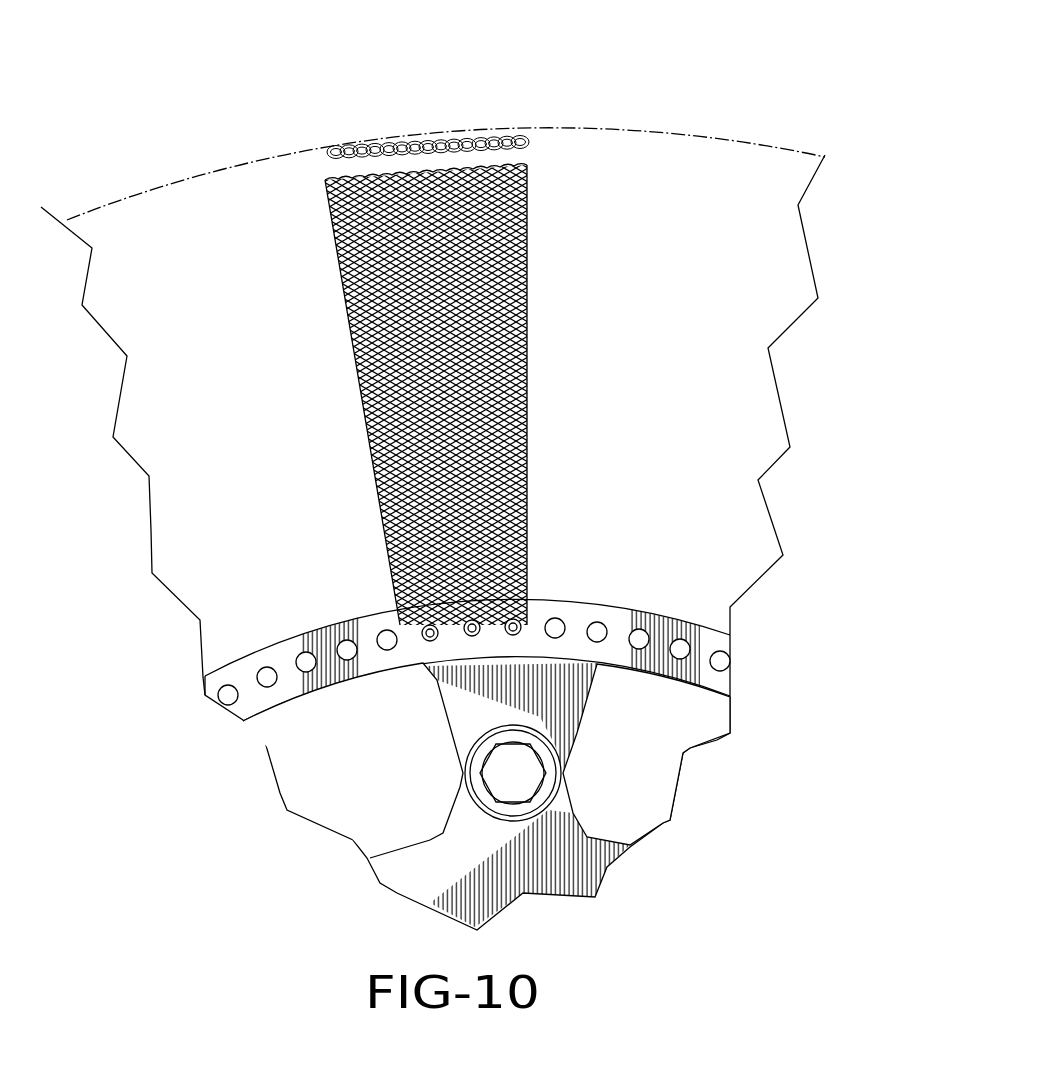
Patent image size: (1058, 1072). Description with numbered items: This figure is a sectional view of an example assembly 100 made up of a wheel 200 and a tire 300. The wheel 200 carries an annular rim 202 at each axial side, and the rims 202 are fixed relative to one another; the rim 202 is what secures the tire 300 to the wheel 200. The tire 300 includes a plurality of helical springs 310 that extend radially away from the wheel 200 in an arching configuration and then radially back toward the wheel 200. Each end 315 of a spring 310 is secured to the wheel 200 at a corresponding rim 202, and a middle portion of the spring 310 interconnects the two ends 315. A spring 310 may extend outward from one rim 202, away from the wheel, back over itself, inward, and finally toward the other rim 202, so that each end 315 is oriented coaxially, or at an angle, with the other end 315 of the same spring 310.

The assembly 100 is at (142, 111).
The wheel 200 is at (503, 633).
The annular rim 202 is at (687, 673).
The tire 300 is at (424, 328).
The helical spring 310 is at (325, 200).
The end of spring 315 is at (523, 633).